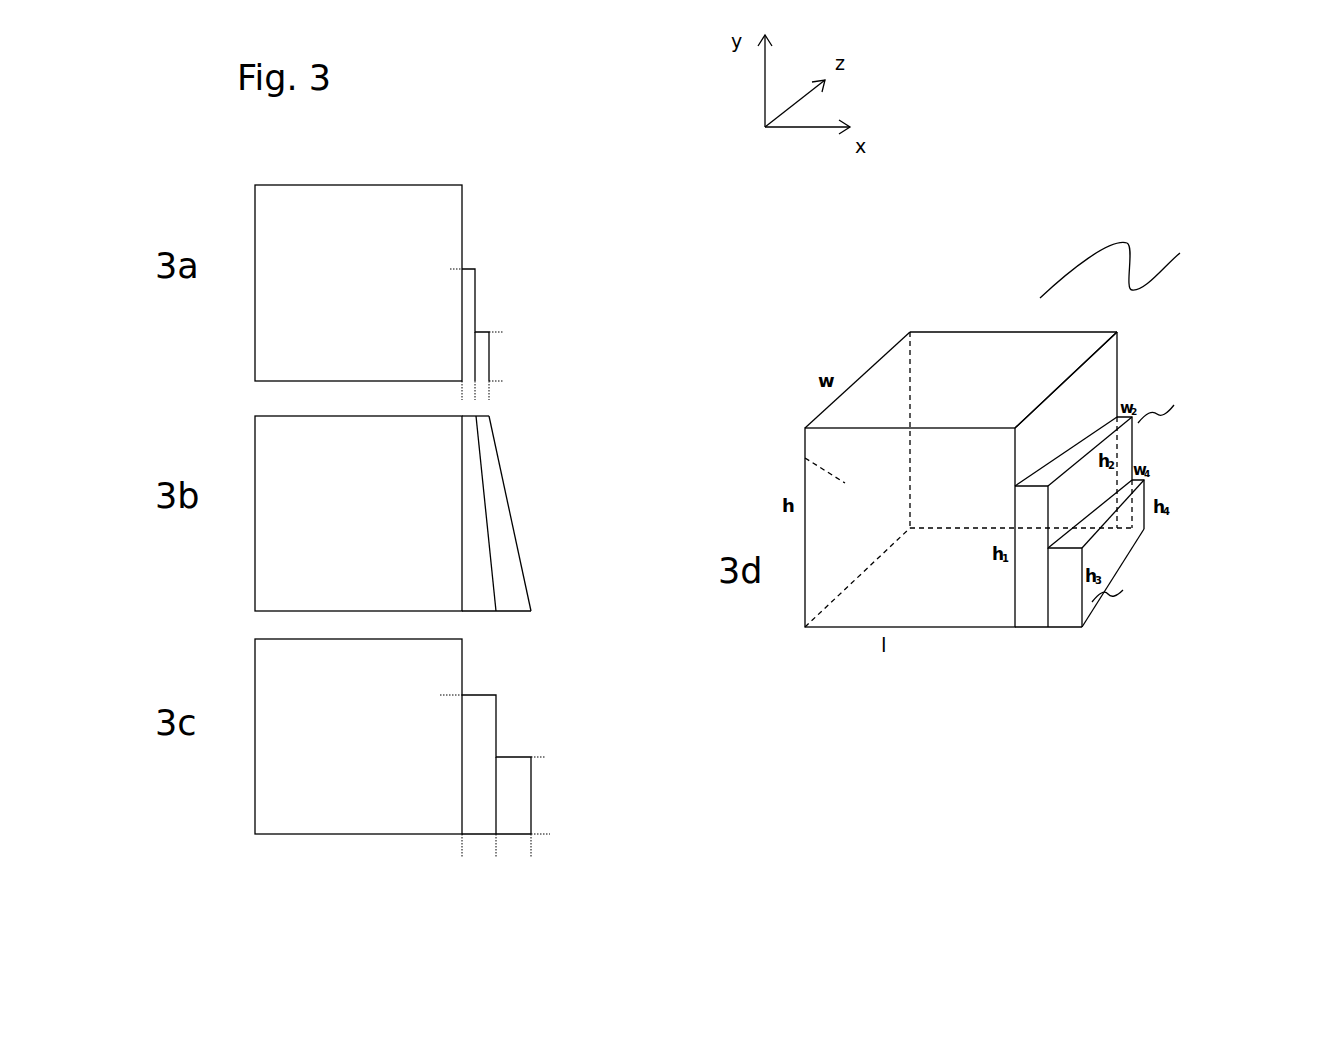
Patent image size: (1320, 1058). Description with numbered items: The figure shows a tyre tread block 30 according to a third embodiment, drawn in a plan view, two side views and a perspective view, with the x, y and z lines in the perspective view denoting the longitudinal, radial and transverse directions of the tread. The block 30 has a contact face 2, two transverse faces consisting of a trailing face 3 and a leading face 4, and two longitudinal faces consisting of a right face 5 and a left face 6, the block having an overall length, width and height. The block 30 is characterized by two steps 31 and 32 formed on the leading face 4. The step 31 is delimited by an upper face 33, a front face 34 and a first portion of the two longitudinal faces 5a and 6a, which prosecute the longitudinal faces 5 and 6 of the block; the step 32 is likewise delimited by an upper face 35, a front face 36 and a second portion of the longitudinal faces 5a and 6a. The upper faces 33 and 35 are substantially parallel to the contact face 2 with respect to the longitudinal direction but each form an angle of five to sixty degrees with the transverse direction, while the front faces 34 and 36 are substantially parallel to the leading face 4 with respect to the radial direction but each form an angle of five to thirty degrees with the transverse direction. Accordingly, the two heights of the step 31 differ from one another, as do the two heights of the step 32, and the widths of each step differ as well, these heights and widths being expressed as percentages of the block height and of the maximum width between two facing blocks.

The contact face 2 is at (862, 396).
The trailing face 3 is at (805, 458).
The leading face 4 is at (1068, 395).
The right face 5 is at (1006, 373).
The longitudinal face portion 5a is at (481, 345).
The left face 6 is at (932, 555).
The longitudinal face portion 6a is at (509, 800).
The block 30 is at (1134, 270).
The step 31 is at (1173, 409).
The step 32 is at (1123, 595).
The upper face 33 is at (468, 471).
The front face 34 is at (489, 537).
The upper face 35 is at (495, 499).
The front face 36 is at (526, 578).